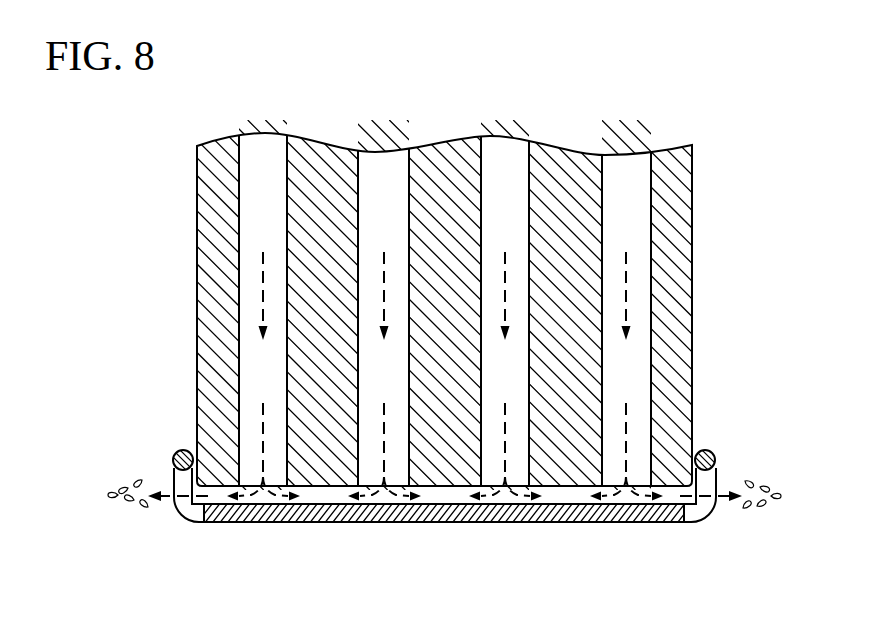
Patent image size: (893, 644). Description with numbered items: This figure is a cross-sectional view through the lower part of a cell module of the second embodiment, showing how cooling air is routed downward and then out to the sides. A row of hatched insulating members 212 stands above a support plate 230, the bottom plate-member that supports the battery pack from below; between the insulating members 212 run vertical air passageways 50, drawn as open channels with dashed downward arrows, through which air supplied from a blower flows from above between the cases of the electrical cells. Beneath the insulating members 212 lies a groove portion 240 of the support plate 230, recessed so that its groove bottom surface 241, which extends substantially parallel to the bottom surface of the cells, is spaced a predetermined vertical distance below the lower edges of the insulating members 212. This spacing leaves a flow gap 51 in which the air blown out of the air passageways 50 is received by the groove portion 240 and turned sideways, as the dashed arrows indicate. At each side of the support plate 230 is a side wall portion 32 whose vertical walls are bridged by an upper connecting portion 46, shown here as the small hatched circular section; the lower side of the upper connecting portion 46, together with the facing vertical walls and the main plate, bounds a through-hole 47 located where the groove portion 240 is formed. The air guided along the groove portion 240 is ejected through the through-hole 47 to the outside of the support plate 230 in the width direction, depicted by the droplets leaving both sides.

The air passageway 50 is at (627, 165).
The insulating member 212 is at (678, 178).
The upper connecting portion 46 is at (468, 426).
The side wall portion 32 is at (713, 452).
The through-hole 47 is at (716, 484).
The flow path 51 is at (323, 487).
The groove portion 240 is at (448, 503).
The groove bottom surface 241 is at (506, 503).
The support plate 230 is at (569, 523).